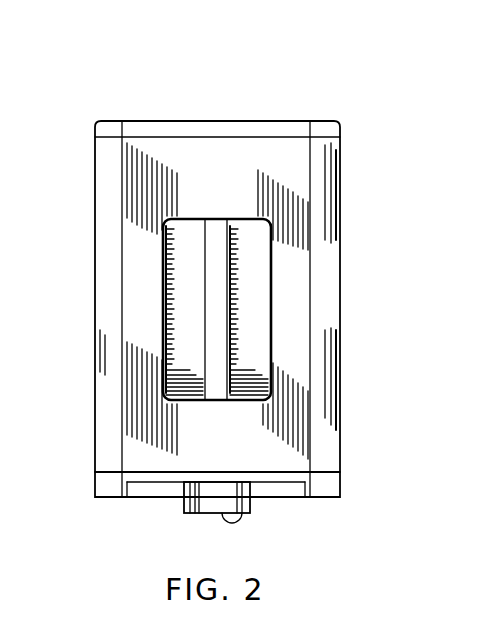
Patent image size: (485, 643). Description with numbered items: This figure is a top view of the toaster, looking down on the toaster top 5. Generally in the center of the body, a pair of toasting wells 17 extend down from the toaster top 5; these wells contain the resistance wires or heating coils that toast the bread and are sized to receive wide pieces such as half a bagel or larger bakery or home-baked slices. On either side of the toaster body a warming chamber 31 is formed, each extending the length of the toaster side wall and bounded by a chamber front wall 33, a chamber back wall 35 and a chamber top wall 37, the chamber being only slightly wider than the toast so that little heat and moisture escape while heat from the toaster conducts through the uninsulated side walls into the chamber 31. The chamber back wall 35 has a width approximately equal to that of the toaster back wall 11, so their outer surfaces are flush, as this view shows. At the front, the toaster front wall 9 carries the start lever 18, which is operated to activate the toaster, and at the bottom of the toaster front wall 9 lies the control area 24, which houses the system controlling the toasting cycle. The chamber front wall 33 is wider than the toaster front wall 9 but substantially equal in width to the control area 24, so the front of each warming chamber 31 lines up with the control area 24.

The toaster back wall 11 is at (250, 128).
The warming chamber 31 is at (175, 128).
The chamber back wall 35 is at (100, 132).
The chamber top wall 37 is at (110, 217).
The toasting well 17 is at (196, 263).
The toaster top 5 is at (95, 378).
The chamber front wall 33 is at (112, 479).
The toaster front wall 9 is at (152, 478).
The start lever 18 is at (188, 507).
The control area 24 is at (275, 491).